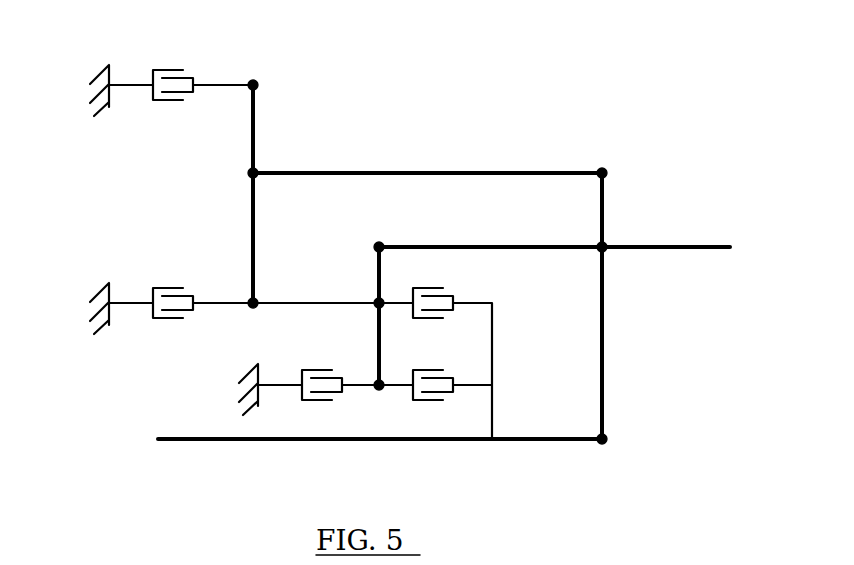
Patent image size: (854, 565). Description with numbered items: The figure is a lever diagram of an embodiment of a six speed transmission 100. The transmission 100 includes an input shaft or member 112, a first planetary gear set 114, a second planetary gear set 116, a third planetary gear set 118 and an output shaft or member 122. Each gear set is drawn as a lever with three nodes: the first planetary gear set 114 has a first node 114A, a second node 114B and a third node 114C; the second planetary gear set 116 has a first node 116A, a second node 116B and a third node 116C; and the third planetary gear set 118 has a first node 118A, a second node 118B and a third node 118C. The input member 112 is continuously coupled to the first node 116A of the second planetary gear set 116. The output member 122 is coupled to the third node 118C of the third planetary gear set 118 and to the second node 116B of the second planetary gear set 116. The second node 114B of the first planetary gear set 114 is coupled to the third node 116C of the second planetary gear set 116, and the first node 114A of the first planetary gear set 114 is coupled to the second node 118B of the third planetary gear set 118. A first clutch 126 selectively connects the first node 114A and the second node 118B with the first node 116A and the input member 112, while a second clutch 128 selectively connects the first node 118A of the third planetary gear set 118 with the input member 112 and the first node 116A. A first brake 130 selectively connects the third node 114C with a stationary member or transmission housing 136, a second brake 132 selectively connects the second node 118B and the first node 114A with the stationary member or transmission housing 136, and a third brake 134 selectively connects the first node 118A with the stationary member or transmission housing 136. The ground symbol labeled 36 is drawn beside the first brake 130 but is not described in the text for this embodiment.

The six speed transmission 100 is at (636, 78).
The ground 36 is at (104, 68).
The input shaft or member 112 is at (188, 441).
The first planetary gear set 114 is at (232, 195).
The first node of first planetary gear set 114A is at (255, 307).
The second node of first planetary gear set 114B is at (248, 173).
The third node of first planetary gear set 114C is at (251, 80).
The second planetary gear set 116 is at (617, 316).
The first node of second planetary gear set 116A is at (600, 442).
The second node of second planetary gear set 116B is at (604, 242).
The third node of second planetary gear set 116C is at (600, 170).
The third planetary gear set 118 is at (368, 345).
The first node of third planetary gear set 118A is at (378, 390).
The second node of third planetary gear set 118B is at (375, 300).
The third node of third planetary gear set 118C is at (378, 244).
The output shaft or member 122 is at (706, 250).
The first clutch 126 is at (432, 288).
The second clutch 128 is at (428, 370).
The first brake 130 is at (180, 68).
The second brake 132 is at (180, 287).
The third brake 134 is at (320, 400).
The stationary member or transmission housing 136 is at (105, 285).